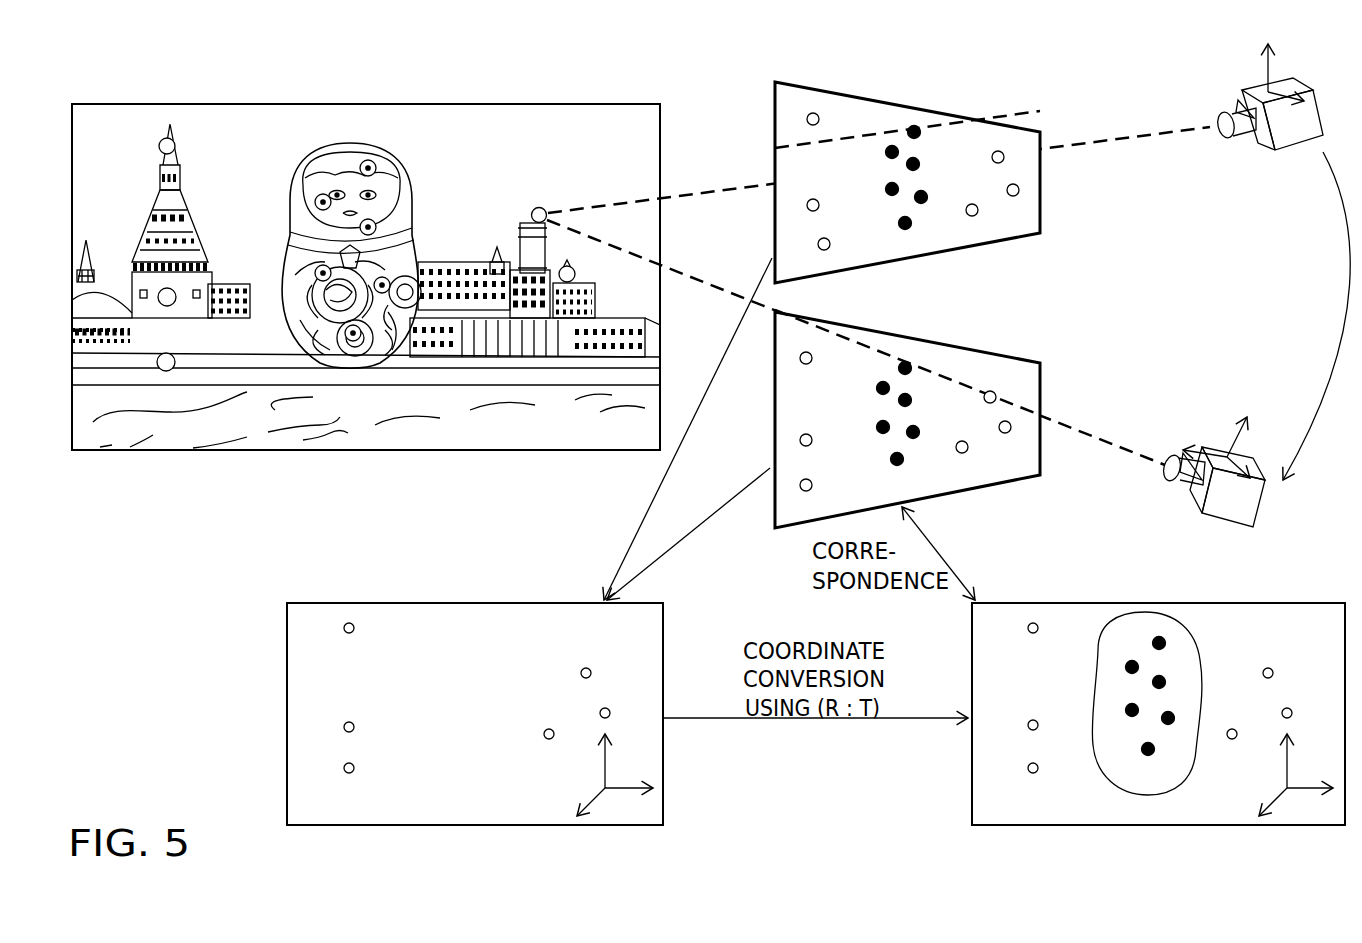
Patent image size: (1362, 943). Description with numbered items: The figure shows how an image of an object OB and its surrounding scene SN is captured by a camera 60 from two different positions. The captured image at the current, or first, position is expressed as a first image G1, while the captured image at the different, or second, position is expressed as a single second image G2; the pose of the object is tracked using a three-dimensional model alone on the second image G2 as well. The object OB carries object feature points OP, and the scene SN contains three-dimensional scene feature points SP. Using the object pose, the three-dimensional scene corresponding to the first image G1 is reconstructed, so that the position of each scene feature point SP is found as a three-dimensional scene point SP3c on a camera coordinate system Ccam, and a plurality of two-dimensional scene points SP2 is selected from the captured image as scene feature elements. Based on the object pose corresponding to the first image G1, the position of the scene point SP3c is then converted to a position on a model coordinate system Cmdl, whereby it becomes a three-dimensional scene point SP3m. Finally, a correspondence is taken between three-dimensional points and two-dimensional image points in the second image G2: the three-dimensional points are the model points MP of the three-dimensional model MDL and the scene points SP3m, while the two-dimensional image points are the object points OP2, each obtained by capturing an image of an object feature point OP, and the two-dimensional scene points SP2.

The scene SN is at (272, 104).
The object OB is at (349, 145).
The object feature point OP is at (398, 182).
The 3D scene feature point SP is at (540, 207).
The second image G2 is at (880, 101).
The first image G1 is at (790, 529).
The object point OP2 is at (909, 396).
The 2D scene point SP2 is at (992, 391).
The camera coordinate system Ccam is at (1308, 45).
The camera 60 is at (1295, 132).
The 3D scene point on camera coordinate system SP3c is at (583, 669).
The 3D model MDL is at (1122, 618).
The 3D model point MP is at (1166, 677).
The 3D scene point on 3D model coordinate system SP3m is at (1272, 668).
The 3D model coordinate system Cmdl is at (1295, 790).